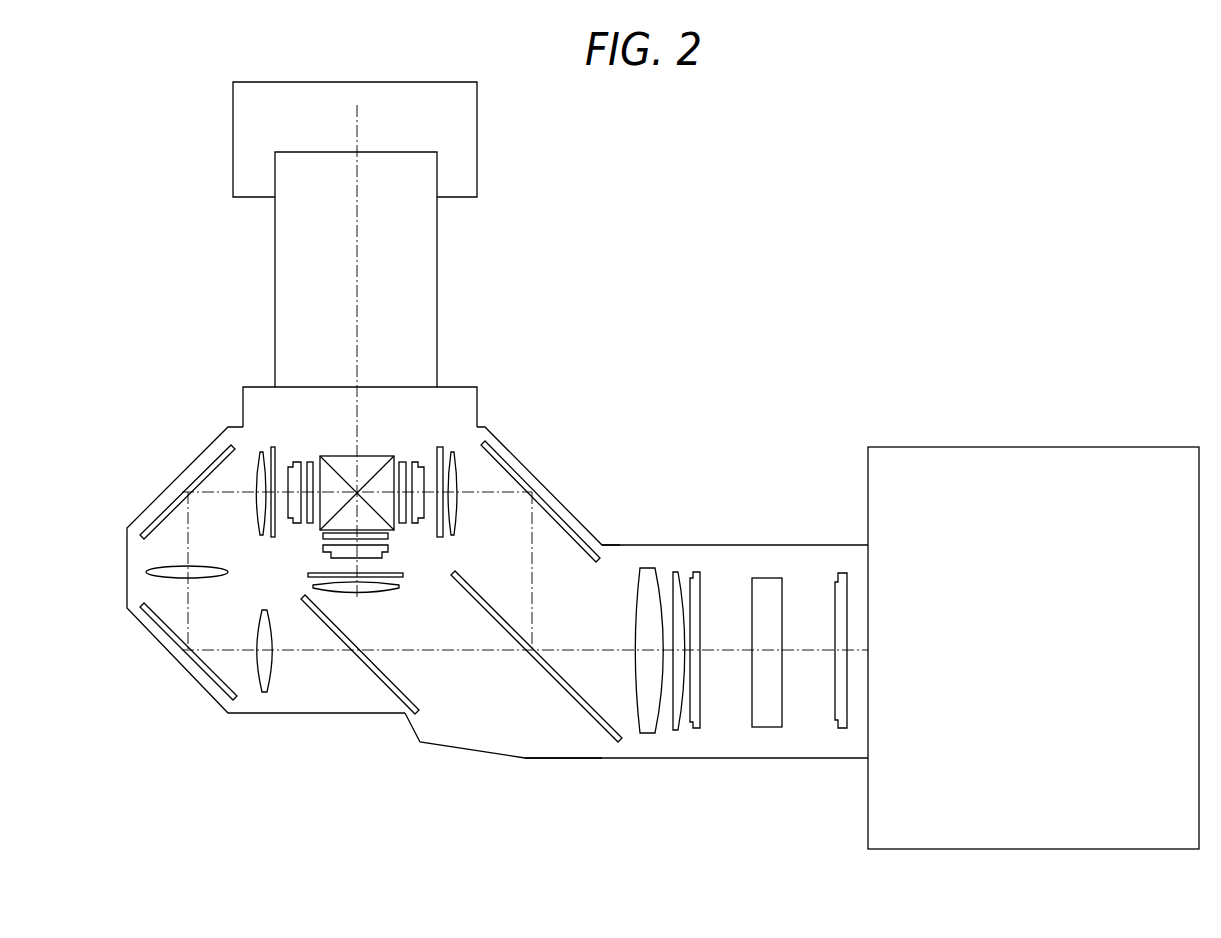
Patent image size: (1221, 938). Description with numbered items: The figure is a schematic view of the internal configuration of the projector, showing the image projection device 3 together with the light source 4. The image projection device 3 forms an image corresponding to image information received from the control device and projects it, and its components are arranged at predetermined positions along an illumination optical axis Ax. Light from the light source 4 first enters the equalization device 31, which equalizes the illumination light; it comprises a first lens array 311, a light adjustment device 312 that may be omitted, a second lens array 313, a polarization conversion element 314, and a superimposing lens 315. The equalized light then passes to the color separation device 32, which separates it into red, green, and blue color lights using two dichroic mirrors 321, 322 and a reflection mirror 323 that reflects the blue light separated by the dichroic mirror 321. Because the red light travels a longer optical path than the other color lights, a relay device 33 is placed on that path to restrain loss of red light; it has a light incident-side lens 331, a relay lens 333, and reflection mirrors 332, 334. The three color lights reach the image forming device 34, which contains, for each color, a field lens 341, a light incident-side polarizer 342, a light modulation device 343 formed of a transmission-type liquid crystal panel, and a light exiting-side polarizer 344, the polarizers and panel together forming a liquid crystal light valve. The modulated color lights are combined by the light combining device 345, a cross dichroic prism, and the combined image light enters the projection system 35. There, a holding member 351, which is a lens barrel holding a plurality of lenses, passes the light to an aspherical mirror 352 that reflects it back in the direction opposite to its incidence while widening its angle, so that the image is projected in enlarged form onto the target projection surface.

The image projection device 3 is at (112, 210).
The light source 4 is at (1098, 446).
The equalization device 31 is at (735, 728).
The first lens array 311 is at (838, 592).
The light adjustment device 312 is at (770, 578).
The second lens array 313 is at (700, 592).
The polarization conversion element 314 is at (675, 572).
The superimposing lens 315 is at (647, 574).
The color separation device 32 is at (520, 712).
The dichroic mirror 321 is at (583, 706).
The dichroic mirror 322 is at (377, 680).
The reflection mirror 323 is at (515, 460).
The relay device 33 is at (292, 697).
The light incident-side lens 331 is at (263, 694).
The reflection mirror 332 is at (207, 678).
The relay lens 333 is at (165, 578).
The reflection mirror 334 is at (207, 468).
The image forming device 34 is at (283, 440).
The field lens 341 is at (256, 513).
The light incident-side polarizer 342 is at (270, 534).
The light modulation device 343 is at (422, 460).
The light exiting-side polarizer 344 is at (403, 462).
The light combining device 345 is at (396, 529).
The projection system 35 is at (198, 225).
The holding member 351 is at (280, 289).
The aspherical mirror 352 is at (260, 183).
The illumination optical axis Ax is at (588, 650).